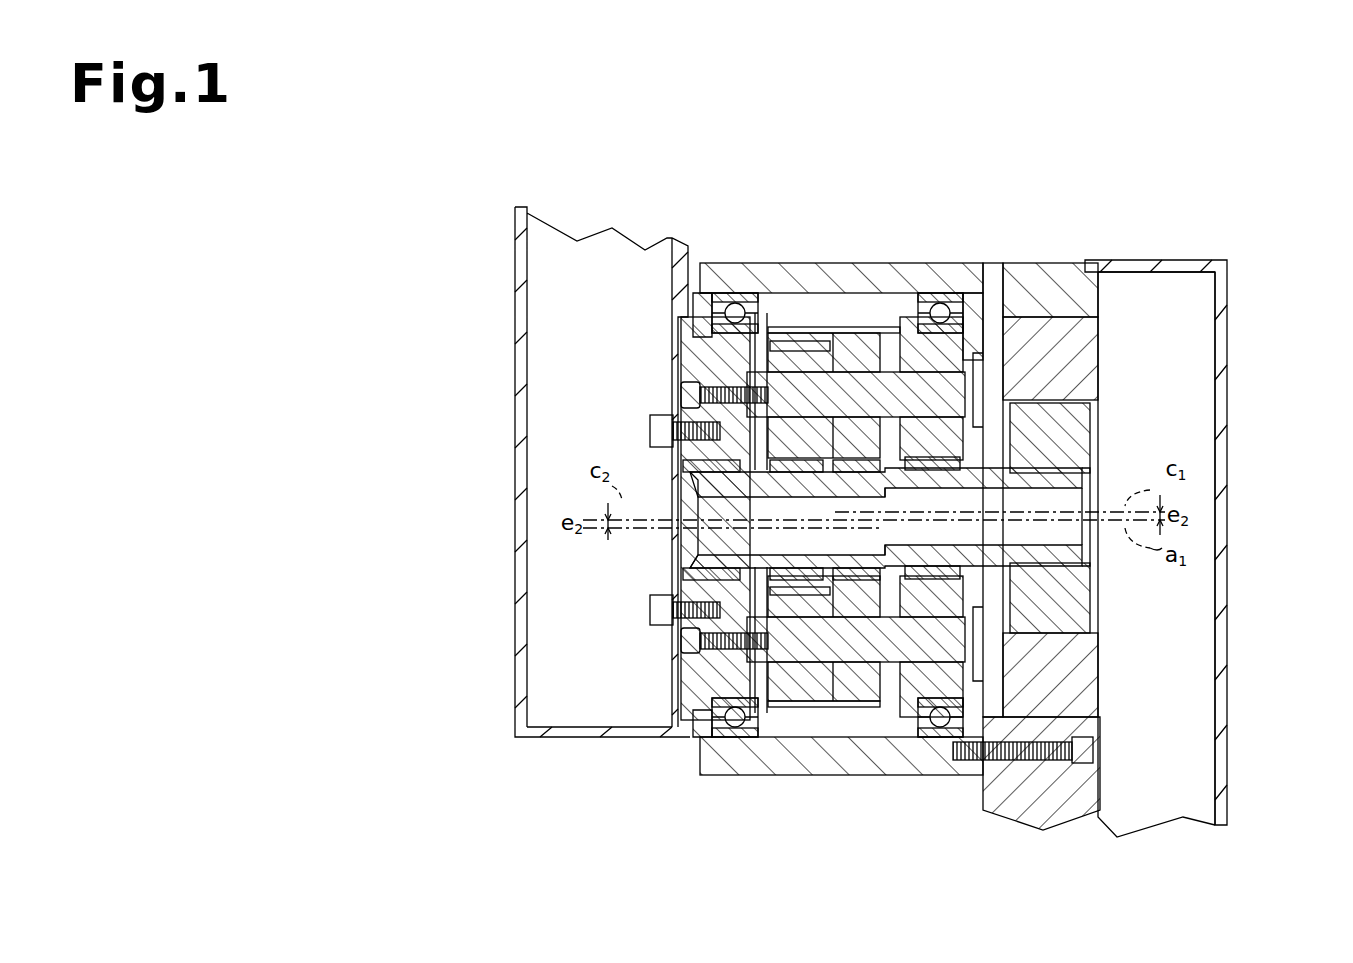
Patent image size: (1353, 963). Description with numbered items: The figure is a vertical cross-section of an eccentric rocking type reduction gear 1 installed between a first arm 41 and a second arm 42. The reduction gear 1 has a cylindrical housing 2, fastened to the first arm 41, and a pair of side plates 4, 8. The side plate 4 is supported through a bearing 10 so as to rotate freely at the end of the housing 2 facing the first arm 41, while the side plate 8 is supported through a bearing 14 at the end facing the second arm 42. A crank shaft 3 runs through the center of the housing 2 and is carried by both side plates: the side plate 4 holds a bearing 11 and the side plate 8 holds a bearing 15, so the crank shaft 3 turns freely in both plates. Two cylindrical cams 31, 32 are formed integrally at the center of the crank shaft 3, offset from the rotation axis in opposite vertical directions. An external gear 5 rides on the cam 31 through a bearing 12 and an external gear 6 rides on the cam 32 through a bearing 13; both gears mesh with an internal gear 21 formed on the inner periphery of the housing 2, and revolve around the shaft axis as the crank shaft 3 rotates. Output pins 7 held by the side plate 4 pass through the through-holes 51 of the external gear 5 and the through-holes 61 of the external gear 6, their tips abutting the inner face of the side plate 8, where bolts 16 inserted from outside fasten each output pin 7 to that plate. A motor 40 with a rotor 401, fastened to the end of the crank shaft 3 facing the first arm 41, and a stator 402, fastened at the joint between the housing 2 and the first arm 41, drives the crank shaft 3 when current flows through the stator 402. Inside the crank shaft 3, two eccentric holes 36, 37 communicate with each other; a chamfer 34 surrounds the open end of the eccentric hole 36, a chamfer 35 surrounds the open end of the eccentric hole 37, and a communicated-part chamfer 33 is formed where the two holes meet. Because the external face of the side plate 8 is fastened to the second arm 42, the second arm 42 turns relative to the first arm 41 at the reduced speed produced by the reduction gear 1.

The eccentric rocking type reduction gear 1 is at (985, 197).
The housing 2 is at (830, 776).
The crank shaft 3 is at (1085, 558).
The side plate 4 is at (1085, 690).
The external gear 5 is at (905, 300).
The external gear 6 is at (798, 320).
The output pin 7 is at (786, 690).
The side plate 8 is at (690, 690).
The bearing 10 is at (930, 745).
The bearing 11 is at (950, 598).
The bearing 12 is at (862, 430).
The bearing 13 is at (805, 470).
The bearing 14 is at (738, 737).
The bearing 15 is at (676, 588).
The bolt 16 is at (680, 645).
The internal gear 21 is at (840, 318).
The cam 31 is at (918, 468).
The cam 32 is at (855, 590).
The communicated-part chamfer 33 is at (890, 500).
The chamfer 34 is at (1090, 490).
The chamfer 35 is at (690, 546).
The eccentric hole 36 is at (995, 541).
The eccentric hole 37 is at (785, 552).
The motor 40 is at (1293, 612).
The first arm 41 is at (1228, 352).
The second arm 42 is at (517, 356).
The through-hole 51 is at (860, 350).
The through-hole 61 is at (795, 440).
The rotor 401 is at (1100, 600).
The stator 402 is at (1100, 665).